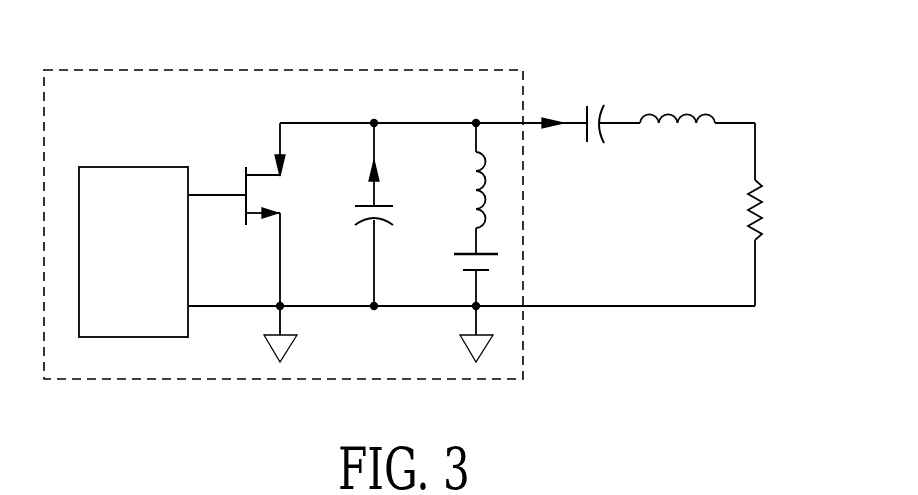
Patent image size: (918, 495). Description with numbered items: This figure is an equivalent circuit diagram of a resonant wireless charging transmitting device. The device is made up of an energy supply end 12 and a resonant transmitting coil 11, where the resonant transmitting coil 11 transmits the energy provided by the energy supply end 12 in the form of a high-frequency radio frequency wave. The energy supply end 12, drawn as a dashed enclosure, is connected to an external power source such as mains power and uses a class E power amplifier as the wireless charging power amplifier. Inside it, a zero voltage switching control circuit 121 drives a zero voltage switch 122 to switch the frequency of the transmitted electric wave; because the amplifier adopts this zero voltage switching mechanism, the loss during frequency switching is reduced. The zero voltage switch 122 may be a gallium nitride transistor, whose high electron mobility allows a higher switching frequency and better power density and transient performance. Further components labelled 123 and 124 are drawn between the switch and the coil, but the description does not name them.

The resonant transmitting coil 11 is at (687, 95).
The energy supply end 12 is at (285, 69).
The zero voltage switching control circuit 121 is at (134, 167).
The zero voltage switch 122 is at (241, 185).
The variable capacitor 123 is at (355, 210).
The inductor 124 is at (467, 193).